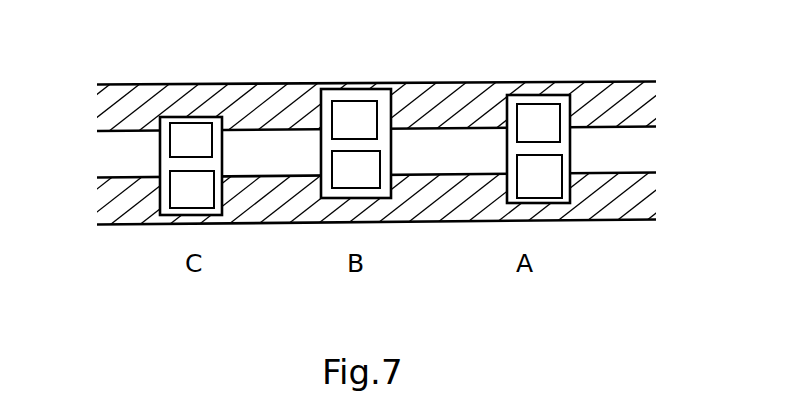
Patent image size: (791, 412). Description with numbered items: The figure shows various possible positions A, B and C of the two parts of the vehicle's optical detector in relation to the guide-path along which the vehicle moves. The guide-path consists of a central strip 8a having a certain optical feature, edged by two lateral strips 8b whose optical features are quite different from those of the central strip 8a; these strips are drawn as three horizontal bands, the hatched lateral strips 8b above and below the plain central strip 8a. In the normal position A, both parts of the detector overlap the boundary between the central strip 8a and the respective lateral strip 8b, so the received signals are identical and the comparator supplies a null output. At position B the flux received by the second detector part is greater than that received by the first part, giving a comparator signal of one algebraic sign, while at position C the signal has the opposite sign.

The lateral strips 8b is at (107, 113).
The central strip 8a is at (108, 164).